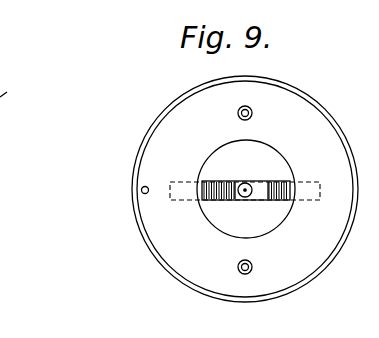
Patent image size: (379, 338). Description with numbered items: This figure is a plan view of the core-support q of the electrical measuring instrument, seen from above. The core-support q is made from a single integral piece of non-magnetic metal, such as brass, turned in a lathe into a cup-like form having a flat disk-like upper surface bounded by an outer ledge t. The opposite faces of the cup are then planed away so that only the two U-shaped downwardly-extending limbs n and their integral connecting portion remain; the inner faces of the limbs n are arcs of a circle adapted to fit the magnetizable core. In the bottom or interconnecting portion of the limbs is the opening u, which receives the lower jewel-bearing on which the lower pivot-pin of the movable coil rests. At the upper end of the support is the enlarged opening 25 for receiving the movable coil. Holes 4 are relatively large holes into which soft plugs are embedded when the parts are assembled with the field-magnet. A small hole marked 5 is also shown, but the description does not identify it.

The outer ledge t is at (133, 203).
The core-support q is at (168, 251).
The holes 4 is at (253, 113).
The small hole 5 is at (148, 187).
The downwardly-extending limbs n is at (246, 189).
The opening u is at (262, 178).
The enlarged opening 25 is at (288, 188).